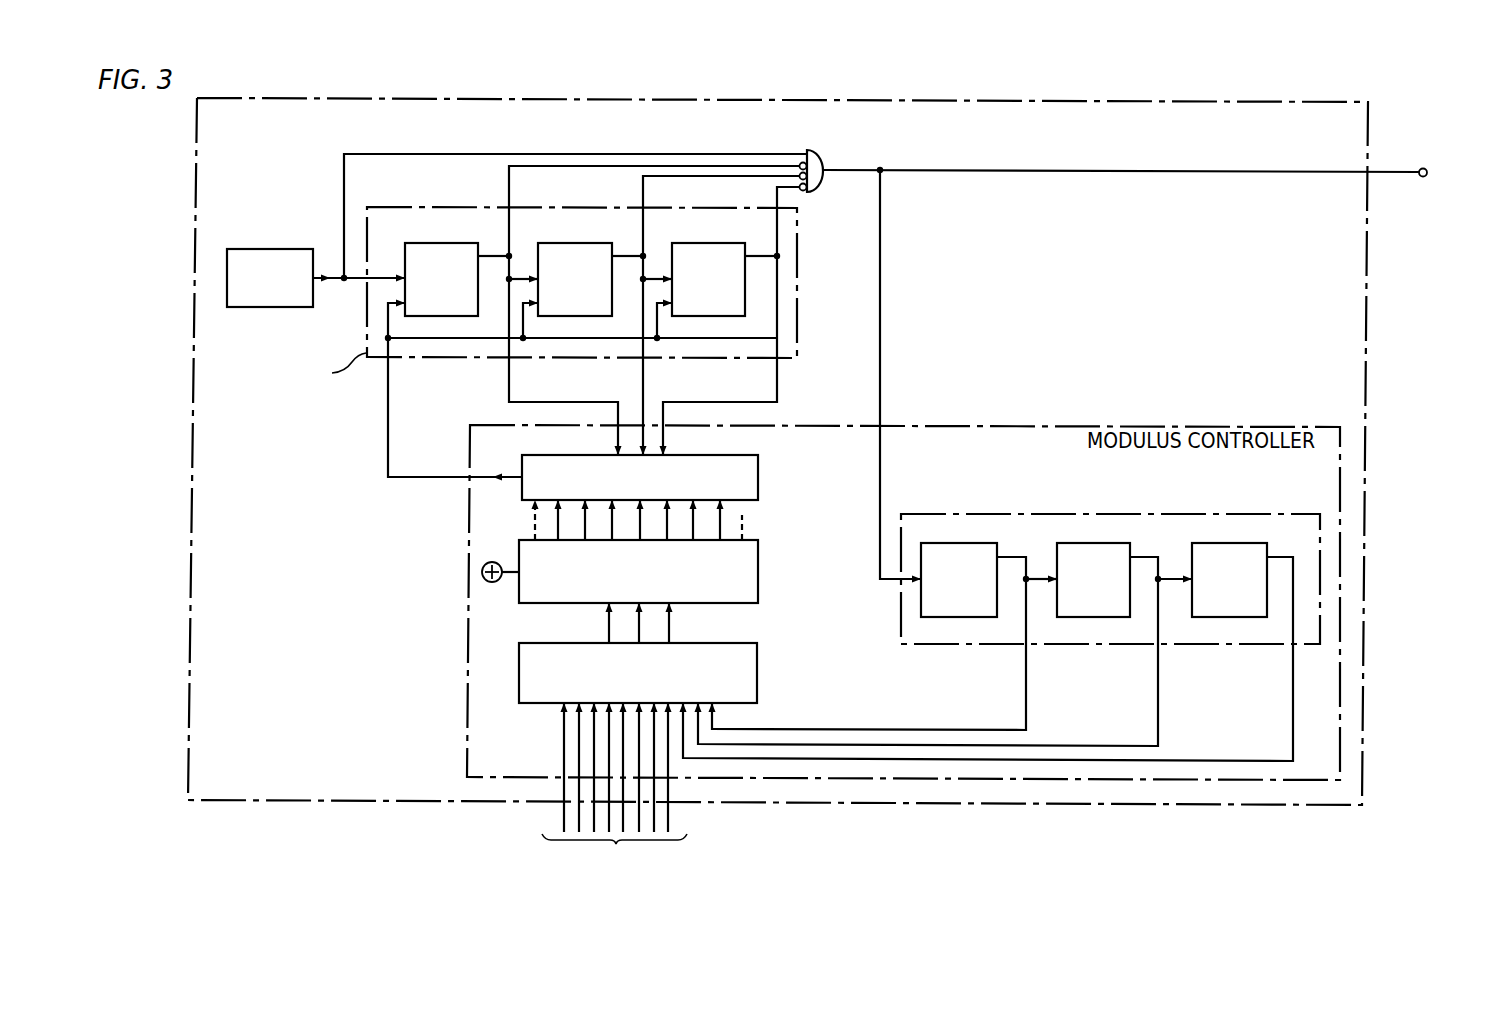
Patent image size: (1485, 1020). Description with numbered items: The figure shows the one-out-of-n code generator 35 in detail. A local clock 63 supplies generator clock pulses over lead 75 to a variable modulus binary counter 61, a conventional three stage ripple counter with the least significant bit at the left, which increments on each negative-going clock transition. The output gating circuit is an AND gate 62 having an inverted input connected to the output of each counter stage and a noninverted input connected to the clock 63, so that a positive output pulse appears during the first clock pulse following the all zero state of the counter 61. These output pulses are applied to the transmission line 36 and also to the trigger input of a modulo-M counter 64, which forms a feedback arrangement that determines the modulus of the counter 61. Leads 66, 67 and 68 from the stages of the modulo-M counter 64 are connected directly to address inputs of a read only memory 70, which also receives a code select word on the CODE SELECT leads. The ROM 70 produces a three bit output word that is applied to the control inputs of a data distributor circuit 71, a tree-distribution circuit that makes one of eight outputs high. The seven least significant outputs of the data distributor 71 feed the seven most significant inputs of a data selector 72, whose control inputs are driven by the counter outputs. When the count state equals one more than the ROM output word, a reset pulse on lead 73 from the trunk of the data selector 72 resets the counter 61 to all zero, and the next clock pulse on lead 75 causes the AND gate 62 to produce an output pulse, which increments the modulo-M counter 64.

The 1:n code generator 35 is at (1120, 101).
The transmission line 36 is at (1395, 170).
The variable modulus binary counter 61 is at (797, 258).
The AND gate 62 is at (822, 160).
The clock 63 is at (270, 249).
The modulo-M counter 64 is at (1094, 514).
The lead from modulo-M counter stage output 66 is at (960, 728).
The lead from modulo-M counter stage output 67 is at (1094, 744).
The lead from modulo-M counter stage output 68 is at (1230, 760).
The read only memory 70 is at (757, 677).
The data distributor circuit 71 is at (758, 573).
The data selector 72 is at (758, 478).
The reset lead 73 is at (388, 450).
The clock lead 75 is at (341, 284).